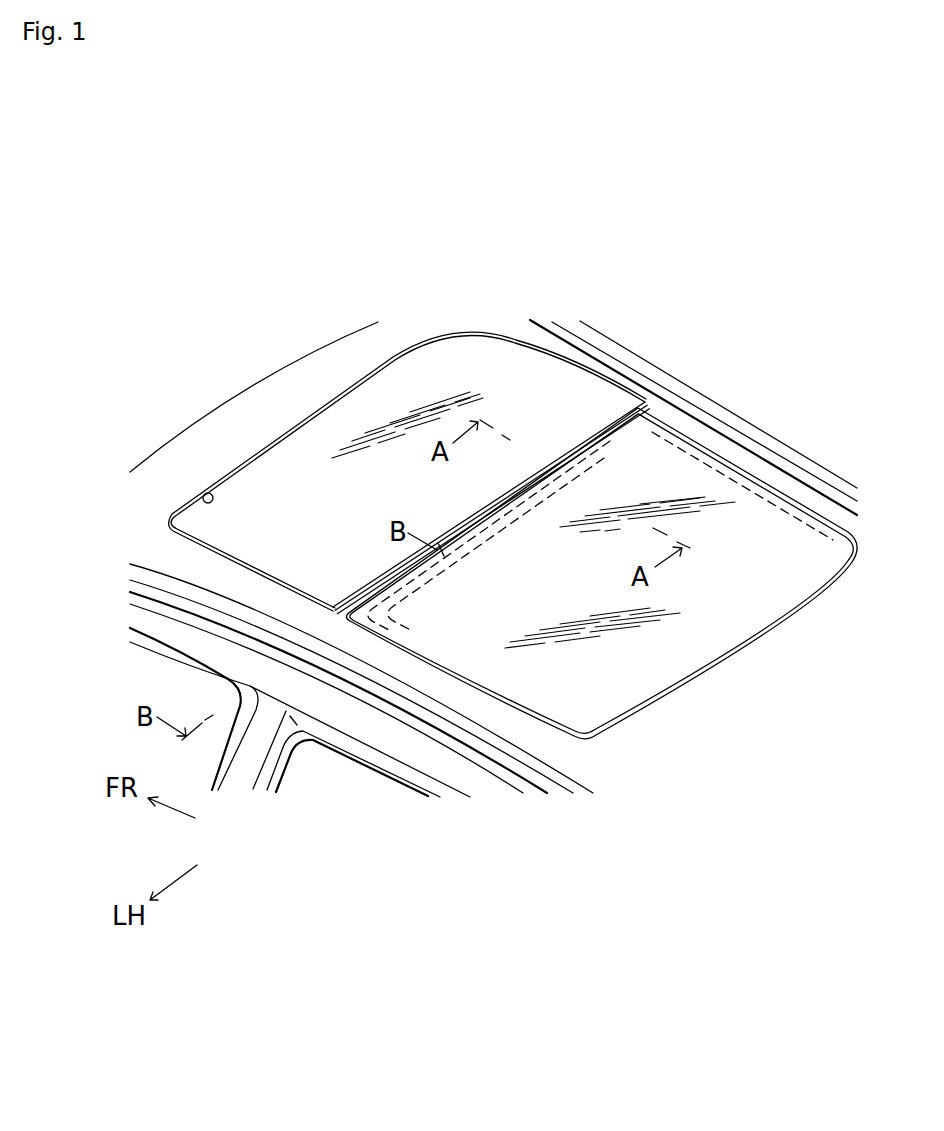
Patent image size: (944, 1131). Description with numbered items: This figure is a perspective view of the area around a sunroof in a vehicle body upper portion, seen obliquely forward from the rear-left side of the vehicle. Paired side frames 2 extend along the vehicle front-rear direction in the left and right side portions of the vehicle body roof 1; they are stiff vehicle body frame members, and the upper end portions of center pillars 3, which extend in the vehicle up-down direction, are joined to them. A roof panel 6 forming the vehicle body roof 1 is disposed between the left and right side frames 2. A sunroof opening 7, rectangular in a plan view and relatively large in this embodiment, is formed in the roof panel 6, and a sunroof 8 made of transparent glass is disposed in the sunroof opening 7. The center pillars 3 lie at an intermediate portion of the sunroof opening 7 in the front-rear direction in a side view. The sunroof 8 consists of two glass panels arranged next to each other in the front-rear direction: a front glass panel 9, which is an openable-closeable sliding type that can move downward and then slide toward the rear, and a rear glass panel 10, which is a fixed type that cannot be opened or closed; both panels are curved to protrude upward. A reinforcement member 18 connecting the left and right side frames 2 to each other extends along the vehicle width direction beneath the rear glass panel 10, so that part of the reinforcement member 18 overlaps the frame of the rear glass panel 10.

The vehicle body roof 1 is at (493, 312).
The side frame 2 is at (733, 412).
The center pillar 3 is at (278, 752).
The roof panel 6 is at (245, 392).
The sunroof opening 7 is at (209, 493).
The sunroof 8 is at (420, 330).
The front glass panel 9 is at (316, 535).
The rear glass panel 10 is at (764, 592).
The reinforcement member 18 is at (612, 447).